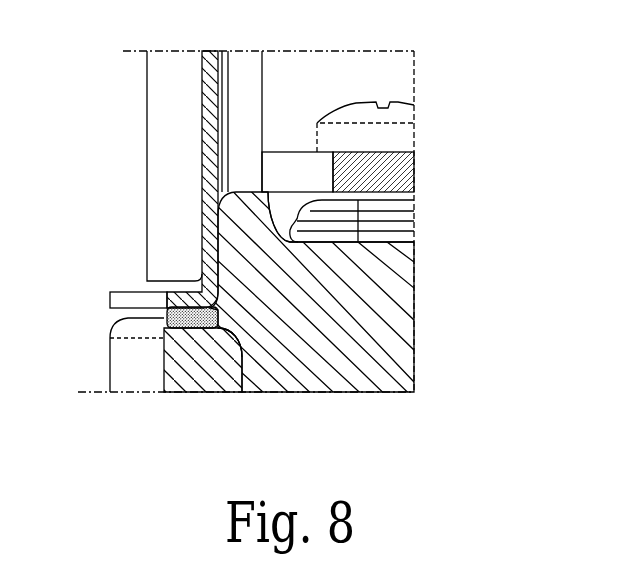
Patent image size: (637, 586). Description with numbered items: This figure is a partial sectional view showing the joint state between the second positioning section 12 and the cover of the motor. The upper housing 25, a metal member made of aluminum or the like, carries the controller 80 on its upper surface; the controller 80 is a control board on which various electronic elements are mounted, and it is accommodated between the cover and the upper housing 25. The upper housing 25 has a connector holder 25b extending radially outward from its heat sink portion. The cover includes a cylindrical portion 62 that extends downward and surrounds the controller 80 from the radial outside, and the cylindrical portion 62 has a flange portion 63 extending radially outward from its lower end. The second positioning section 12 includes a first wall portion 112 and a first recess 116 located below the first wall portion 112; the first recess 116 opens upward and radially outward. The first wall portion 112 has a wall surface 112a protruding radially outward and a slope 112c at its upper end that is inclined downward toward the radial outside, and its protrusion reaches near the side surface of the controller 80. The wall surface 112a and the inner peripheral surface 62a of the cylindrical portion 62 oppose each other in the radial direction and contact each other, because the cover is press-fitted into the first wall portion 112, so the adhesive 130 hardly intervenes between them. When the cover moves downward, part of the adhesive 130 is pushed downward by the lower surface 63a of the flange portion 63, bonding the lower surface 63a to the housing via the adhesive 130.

The second positioning section 12 is at (275, 137).
The upper housing 25 is at (317, 293).
The connector holder 25b is at (398, 280).
The cylindrical portion 62 is at (157, 98).
The inner peripheral surface 62a is at (220, 93).
The flange portion 63 is at (122, 300).
The lower surface 63a is at (188, 326).
The controller 80 is at (400, 176).
The first wall portion 112 is at (150, 179).
The wall surface 112a is at (215, 238).
The slope 112c is at (202, 175).
The first recess 116 is at (172, 318).
The adhesive 130 is at (240, 352).